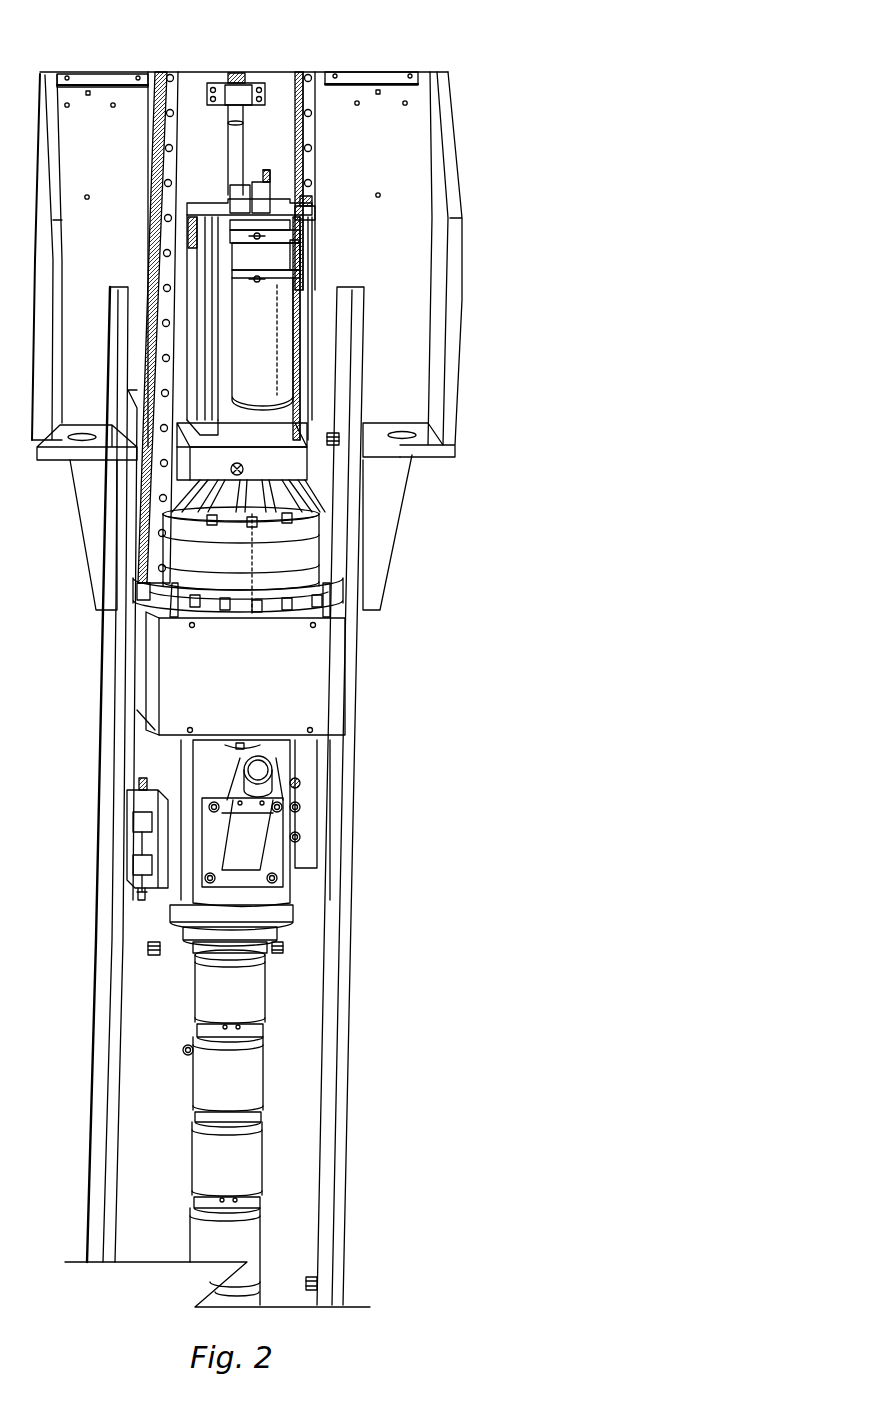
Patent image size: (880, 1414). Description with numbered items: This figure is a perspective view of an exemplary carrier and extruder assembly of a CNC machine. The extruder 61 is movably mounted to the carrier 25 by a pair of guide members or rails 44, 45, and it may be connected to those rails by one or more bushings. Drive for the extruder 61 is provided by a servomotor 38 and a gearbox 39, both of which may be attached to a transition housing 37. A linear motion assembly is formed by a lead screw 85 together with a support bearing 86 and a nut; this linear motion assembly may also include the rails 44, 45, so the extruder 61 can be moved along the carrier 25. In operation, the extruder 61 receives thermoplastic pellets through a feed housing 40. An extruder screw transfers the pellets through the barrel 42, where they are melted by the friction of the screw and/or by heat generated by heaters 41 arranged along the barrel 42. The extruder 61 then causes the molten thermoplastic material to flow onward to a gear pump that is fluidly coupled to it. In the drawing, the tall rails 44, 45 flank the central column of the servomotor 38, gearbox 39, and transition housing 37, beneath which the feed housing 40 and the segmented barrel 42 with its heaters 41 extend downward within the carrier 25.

The carrier 25 is at (483, 233).
The rail 44 is at (173, 72).
The rail 45 is at (307, 72).
The support bearing 86 is at (239, 100).
The lead screw 85 is at (233, 143).
The servomotor 38 is at (263, 300).
The gearbox 39 is at (288, 464).
The transition housing 37 is at (293, 673).
The feed housing 40 is at (278, 780).
The extruder 61 is at (291, 864).
The heaters 41 is at (250, 997).
The barrel 42 is at (257, 1113).